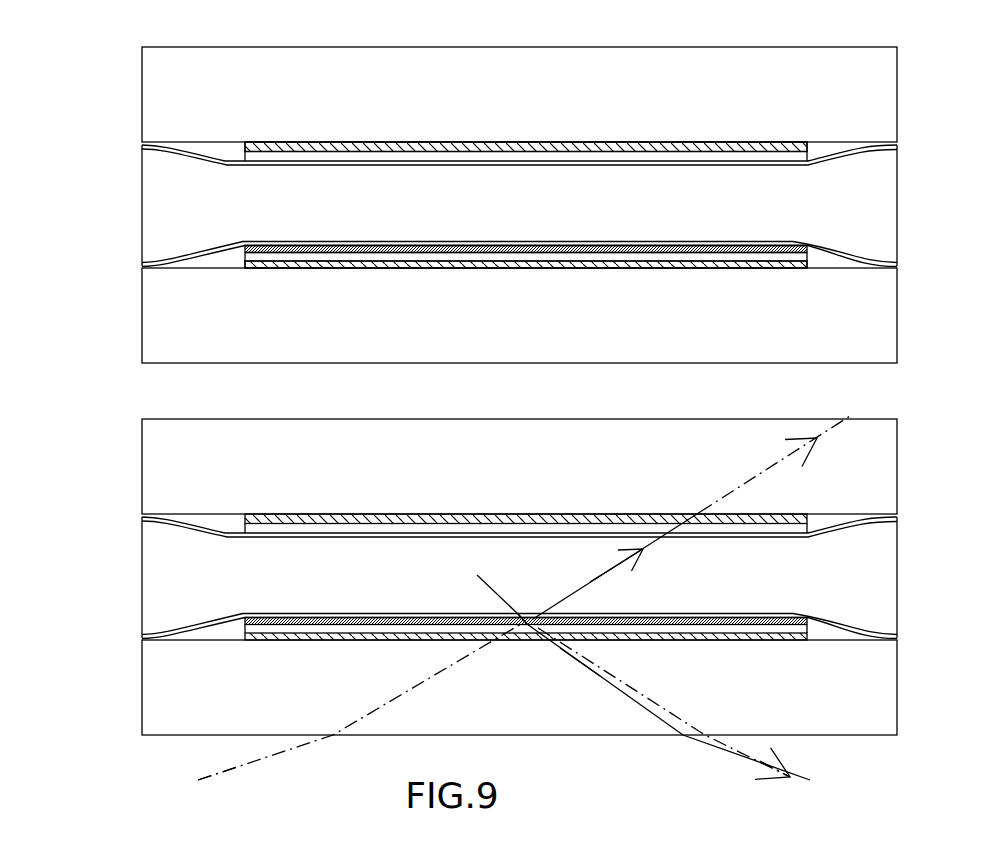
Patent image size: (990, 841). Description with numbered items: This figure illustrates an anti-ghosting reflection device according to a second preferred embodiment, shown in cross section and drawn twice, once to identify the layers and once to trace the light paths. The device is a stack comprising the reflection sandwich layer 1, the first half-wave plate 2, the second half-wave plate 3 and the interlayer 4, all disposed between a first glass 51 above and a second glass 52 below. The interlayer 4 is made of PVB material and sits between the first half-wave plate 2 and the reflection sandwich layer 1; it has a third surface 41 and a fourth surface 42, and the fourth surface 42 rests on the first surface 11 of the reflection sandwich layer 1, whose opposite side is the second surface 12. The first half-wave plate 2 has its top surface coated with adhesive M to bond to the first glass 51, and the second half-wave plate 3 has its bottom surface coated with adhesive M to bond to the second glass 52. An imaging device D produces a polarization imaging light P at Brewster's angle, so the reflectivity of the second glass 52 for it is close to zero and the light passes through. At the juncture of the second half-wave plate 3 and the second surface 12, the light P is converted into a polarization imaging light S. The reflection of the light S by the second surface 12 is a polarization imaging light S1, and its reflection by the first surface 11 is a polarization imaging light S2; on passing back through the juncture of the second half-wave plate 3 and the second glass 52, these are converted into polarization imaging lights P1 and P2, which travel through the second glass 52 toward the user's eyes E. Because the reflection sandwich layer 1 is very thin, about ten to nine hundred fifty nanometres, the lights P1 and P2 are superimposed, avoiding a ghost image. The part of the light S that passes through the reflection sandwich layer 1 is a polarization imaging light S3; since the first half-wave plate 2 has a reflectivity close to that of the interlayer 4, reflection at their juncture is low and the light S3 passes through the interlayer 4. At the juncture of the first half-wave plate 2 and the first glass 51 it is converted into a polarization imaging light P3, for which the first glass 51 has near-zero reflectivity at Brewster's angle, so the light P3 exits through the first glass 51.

The first glass 51 is at (884, 117).
The second glass 52 is at (886, 302).
The interlayer 4 is at (545, 206).
The third surface 41 is at (600, 165).
The fourth surface 42 is at (657, 242).
The first half-wave plate 2 is at (548, 150).
The second half-wave plate 3 is at (540, 253).
The reflection sandwich layer 1 is at (526, 250).
The first surface 11 is at (737, 243).
The second surface 12 is at (755, 255).
The adhesive M is at (305, 143).
The polarization imaging light S is at (638, 664).
The polarization imaging light S1 is at (526, 626).
The polarization imaging light S2 is at (577, 617).
The polarization imaging light S3 is at (600, 573).
The polarization imaging light P is at (359, 702).
The polarization imaging light P1 is at (583, 660).
The polarization imaging light P2 is at (610, 668).
The polarization imaging light P3 is at (703, 510).
The imaging device D is at (208, 780).
The user's eyes E is at (804, 765).